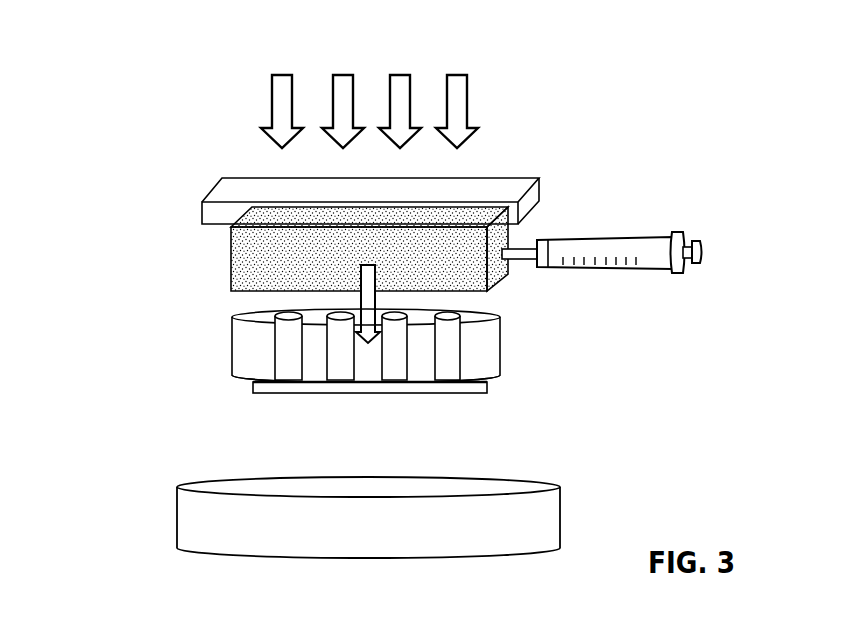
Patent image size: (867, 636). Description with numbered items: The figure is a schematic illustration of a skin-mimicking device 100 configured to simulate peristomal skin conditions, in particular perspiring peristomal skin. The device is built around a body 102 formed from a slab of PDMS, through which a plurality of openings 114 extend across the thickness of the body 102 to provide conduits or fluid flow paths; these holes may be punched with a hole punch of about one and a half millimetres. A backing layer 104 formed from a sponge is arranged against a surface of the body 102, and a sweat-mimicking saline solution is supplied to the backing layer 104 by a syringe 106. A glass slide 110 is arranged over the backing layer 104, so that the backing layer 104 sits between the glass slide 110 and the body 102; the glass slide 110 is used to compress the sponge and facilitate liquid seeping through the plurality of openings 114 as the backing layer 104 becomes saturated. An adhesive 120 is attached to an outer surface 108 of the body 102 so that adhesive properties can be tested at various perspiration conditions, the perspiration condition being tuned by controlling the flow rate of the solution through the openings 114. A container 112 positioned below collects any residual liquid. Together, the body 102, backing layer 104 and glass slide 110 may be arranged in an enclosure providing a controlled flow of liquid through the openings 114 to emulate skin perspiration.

The skin-mimicking device 100 is at (152, 40).
The body 102 is at (492, 337).
The backing layer 104 is at (231, 263).
The syringe 106 is at (612, 252).
The outer surface 108 is at (236, 378).
The glass slide 110 is at (202, 212).
The container 112 is at (177, 520).
The openings 114 is at (280, 358).
The adhesive 120 is at (488, 385).